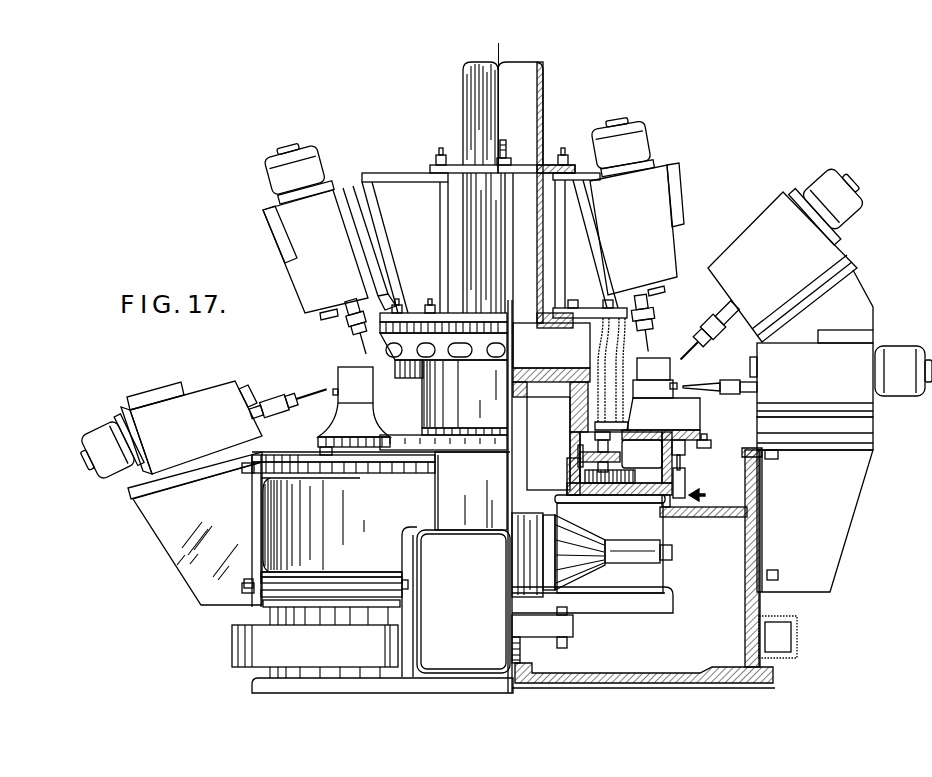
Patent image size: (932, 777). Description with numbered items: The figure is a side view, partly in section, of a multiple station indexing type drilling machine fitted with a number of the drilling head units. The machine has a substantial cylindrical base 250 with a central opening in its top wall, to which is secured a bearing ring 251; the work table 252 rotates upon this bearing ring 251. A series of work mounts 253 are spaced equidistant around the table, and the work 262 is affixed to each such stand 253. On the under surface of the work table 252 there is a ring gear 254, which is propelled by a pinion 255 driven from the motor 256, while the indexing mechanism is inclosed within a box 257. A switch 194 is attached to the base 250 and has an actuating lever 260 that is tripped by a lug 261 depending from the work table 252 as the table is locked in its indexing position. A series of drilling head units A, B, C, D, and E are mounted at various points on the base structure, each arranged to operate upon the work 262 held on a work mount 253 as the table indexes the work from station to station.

The spindle motor unit A is at (838, 372).
The spindle motor unit B is at (778, 252).
The spindle motor unit C is at (640, 242).
The spindle motor unit D is at (304, 222).
The spindle motor unit E is at (213, 418).
The switch 194 is at (687, 480).
The housing frame 250 is at (760, 605).
The bearing plate 251 is at (653, 495).
The support plate 252 is at (690, 432).
The work holder hub 253 is at (664, 414).
The drive shaft 254 is at (636, 474).
The gear 255 is at (603, 483).
The drive motor 256 is at (570, 592).
The mounting plate 257 is at (655, 573).
The actuating rod 260 is at (681, 460).
The bracket 261 is at (686, 445).
The work holder cup 262 is at (660, 370).